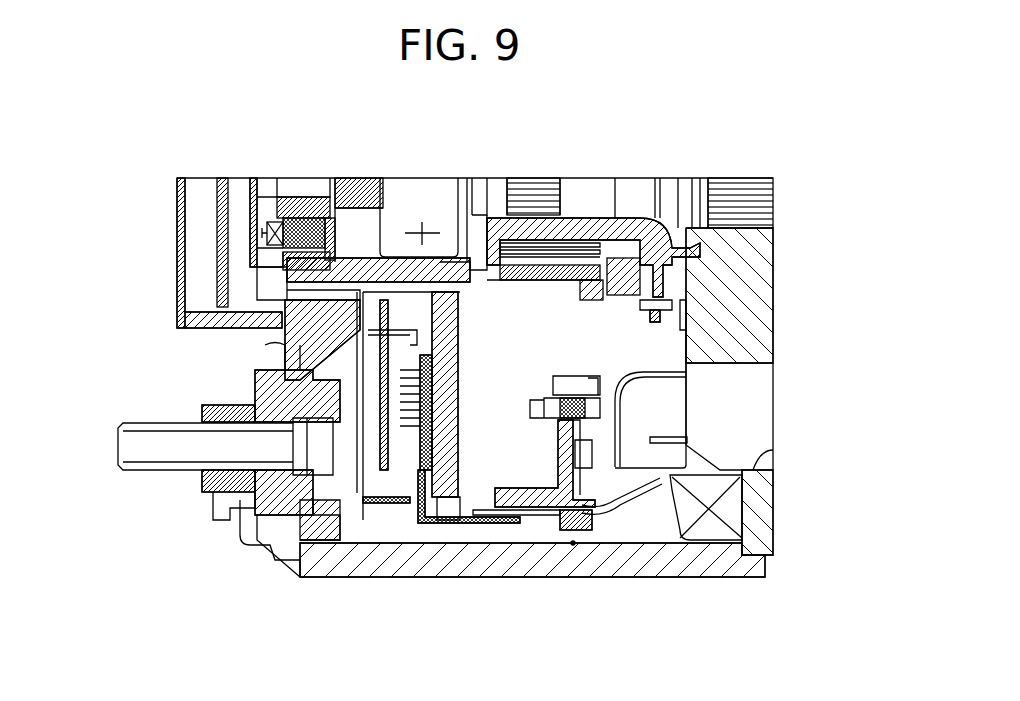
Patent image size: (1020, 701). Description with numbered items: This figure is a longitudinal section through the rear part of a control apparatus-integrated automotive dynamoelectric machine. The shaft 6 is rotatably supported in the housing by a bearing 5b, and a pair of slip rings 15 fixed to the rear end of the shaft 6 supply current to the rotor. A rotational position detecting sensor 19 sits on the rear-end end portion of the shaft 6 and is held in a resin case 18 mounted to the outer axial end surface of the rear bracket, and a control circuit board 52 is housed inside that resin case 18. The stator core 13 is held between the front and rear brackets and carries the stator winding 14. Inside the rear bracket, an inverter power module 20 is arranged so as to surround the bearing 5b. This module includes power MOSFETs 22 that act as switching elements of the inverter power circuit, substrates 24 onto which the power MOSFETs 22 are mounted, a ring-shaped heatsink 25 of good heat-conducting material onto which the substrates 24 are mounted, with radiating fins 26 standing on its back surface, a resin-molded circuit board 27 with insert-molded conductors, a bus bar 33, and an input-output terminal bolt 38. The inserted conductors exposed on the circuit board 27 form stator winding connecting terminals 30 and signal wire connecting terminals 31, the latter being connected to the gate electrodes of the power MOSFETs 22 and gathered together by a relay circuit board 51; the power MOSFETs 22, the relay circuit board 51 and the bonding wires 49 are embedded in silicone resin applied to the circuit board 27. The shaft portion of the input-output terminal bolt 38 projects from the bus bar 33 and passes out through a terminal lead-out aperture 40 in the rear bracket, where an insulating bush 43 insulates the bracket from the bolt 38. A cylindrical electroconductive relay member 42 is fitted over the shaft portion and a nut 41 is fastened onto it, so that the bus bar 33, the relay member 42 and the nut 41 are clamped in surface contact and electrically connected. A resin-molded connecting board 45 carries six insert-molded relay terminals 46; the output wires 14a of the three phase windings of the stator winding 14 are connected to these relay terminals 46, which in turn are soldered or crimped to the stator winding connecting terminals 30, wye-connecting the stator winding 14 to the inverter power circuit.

The bearing 5b is at (441, 290).
The shaft 6 is at (640, 190).
The stator core 13 is at (768, 542).
The stator winding 14 is at (712, 527).
The output wires 14a is at (632, 505).
The slip rings 15 is at (570, 243).
The resin case 18 is at (199, 178).
The rotational position detecting sensor 19 is at (267, 232).
The inverter power module 20 is at (320, 505).
The power MOSFETs 22 is at (370, 450).
The substrates 24 is at (432, 470).
The heatsink 25 is at (412, 250).
The radiating fins 26 is at (493, 307).
The circuit board 27 is at (408, 515).
The stator winding connecting terminals 30 is at (463, 520).
The signal wire connecting terminals 31 is at (360, 330).
The bus bar 33 is at (313, 512).
The input-output terminal bolt 38 is at (112, 438).
The terminal lead-out aperture 40 is at (275, 402).
The nut 41 is at (203, 482).
The relay member 42 is at (250, 507).
The insulating bush 43 is at (213, 515).
The connecting board 45 is at (573, 545).
The relay terminals 46 is at (543, 510).
The bonding wires 49 is at (385, 507).
The relay circuit board 51 is at (373, 305).
The control circuit board 52 is at (217, 224).